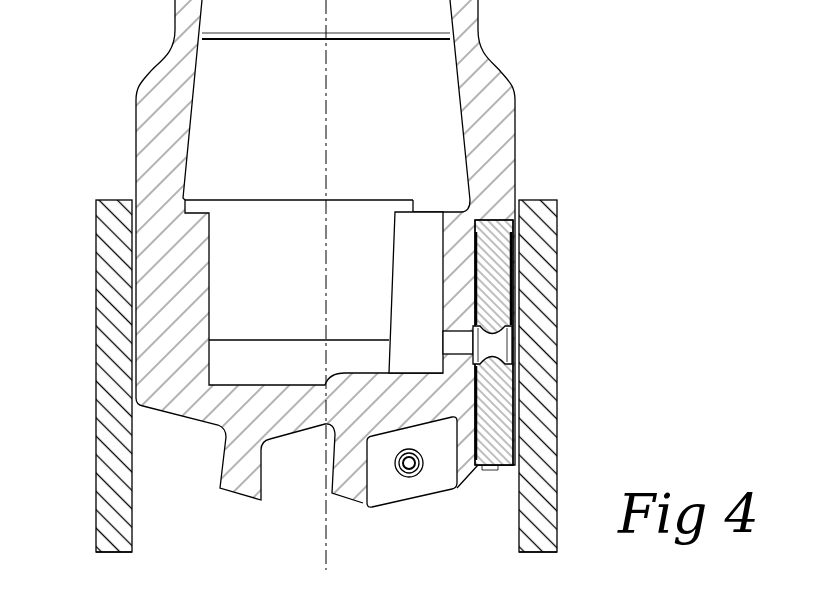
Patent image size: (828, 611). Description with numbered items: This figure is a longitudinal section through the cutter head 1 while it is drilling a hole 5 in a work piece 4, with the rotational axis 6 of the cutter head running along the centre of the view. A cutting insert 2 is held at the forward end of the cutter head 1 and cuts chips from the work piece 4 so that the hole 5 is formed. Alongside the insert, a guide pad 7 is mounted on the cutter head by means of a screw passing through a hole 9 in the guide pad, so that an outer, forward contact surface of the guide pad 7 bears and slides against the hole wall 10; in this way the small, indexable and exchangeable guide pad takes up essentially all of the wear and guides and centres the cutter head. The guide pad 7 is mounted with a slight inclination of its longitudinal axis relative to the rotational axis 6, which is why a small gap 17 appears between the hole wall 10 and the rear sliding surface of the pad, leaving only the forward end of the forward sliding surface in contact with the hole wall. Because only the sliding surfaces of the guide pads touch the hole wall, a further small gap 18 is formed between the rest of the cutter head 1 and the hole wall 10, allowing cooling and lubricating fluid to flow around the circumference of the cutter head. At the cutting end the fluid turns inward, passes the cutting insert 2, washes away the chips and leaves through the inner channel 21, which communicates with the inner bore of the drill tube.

The cutter head 1 is at (488, 113).
The cutting insert 2 is at (399, 492).
The work piece 4 is at (547, 233).
The hole 5 is at (268, 517).
The rotational axis 6 is at (326, 518).
The guide pad 7 is at (500, 445).
The hole 9 is at (497, 343).
The hole wall 10 is at (132, 518).
The gap 17 is at (518, 257).
The gap 18 is at (135, 238).
The inner channel 21 is at (216, 114).